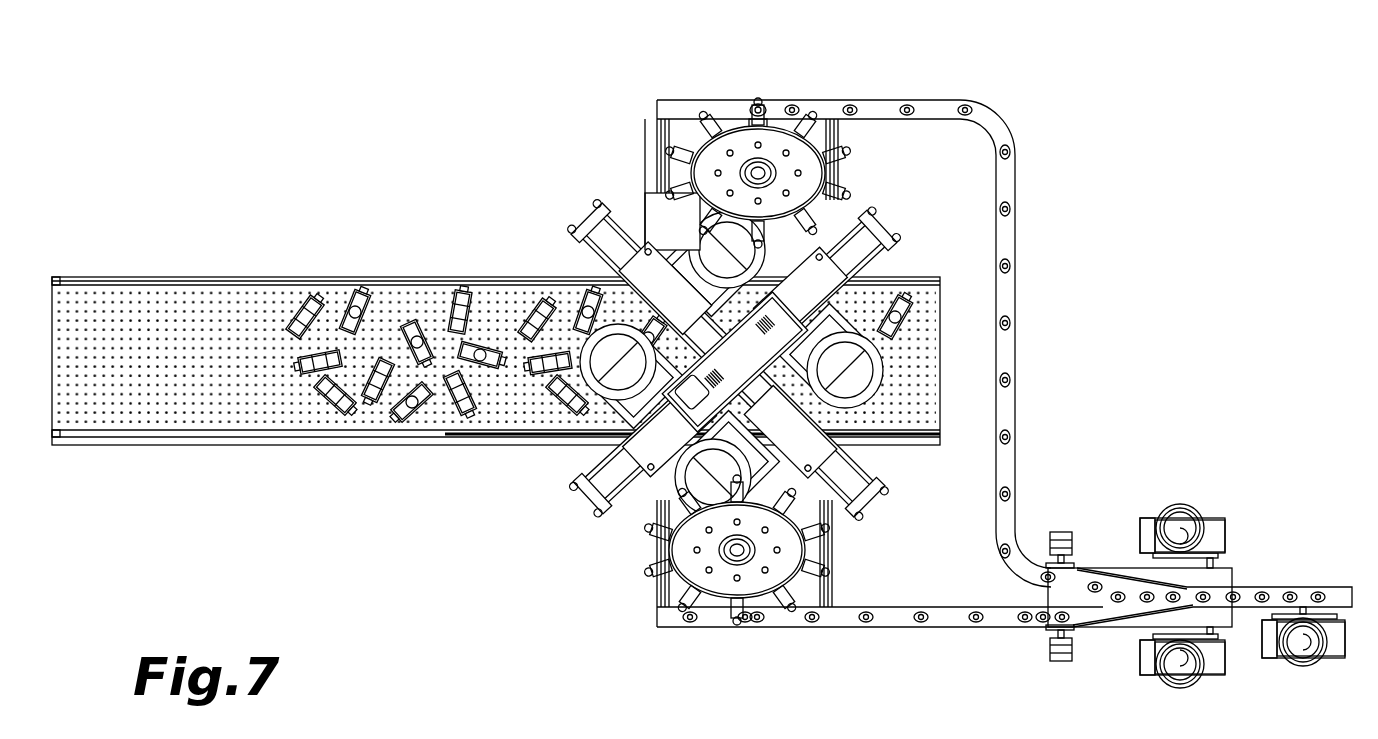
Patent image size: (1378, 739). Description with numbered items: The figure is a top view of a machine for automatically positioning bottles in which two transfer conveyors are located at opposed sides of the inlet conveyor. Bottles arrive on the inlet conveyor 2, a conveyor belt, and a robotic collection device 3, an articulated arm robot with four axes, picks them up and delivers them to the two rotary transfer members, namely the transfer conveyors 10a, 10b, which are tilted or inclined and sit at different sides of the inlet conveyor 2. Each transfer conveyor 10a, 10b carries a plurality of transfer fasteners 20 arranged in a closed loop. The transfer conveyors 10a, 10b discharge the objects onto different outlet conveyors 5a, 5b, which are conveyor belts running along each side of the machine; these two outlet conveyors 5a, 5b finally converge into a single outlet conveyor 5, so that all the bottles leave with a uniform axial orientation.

The inlet conveyor 2 is at (205, 293).
The robotic collection device 3 is at (734, 362).
The outlet conveyor 5 is at (1276, 590).
The outlet conveyor 5a is at (886, 630).
The outlet conveyor 5b is at (878, 100).
The transfer conveyor 10a is at (690, 566).
The transfer conveyor 10b is at (700, 160).
The transfer fasteners 20 is at (832, 150).